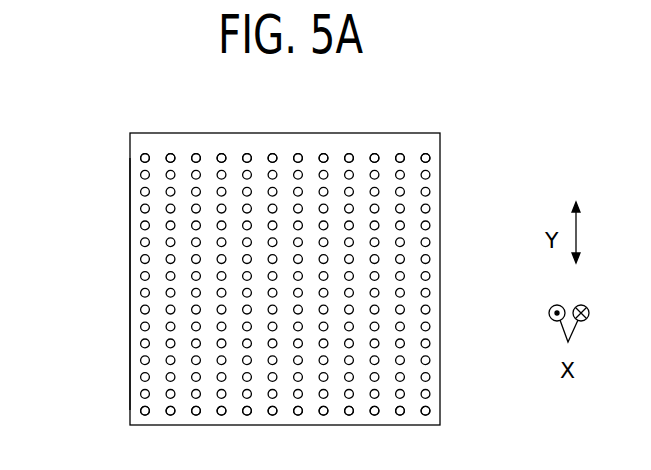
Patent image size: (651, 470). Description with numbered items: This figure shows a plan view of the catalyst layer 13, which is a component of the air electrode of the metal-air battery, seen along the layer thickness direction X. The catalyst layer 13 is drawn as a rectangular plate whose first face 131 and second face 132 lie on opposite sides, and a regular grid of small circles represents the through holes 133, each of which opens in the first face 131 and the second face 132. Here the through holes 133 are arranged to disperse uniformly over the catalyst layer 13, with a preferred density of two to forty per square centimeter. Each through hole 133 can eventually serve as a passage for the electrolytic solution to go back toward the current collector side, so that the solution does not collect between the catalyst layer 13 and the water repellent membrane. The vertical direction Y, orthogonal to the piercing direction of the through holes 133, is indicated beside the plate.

The catalyst layer 13 is at (203, 133).
The first face 131 is at (360, 146).
The second face 132 is at (285, 285).
The through hole 133 is at (131, 268).